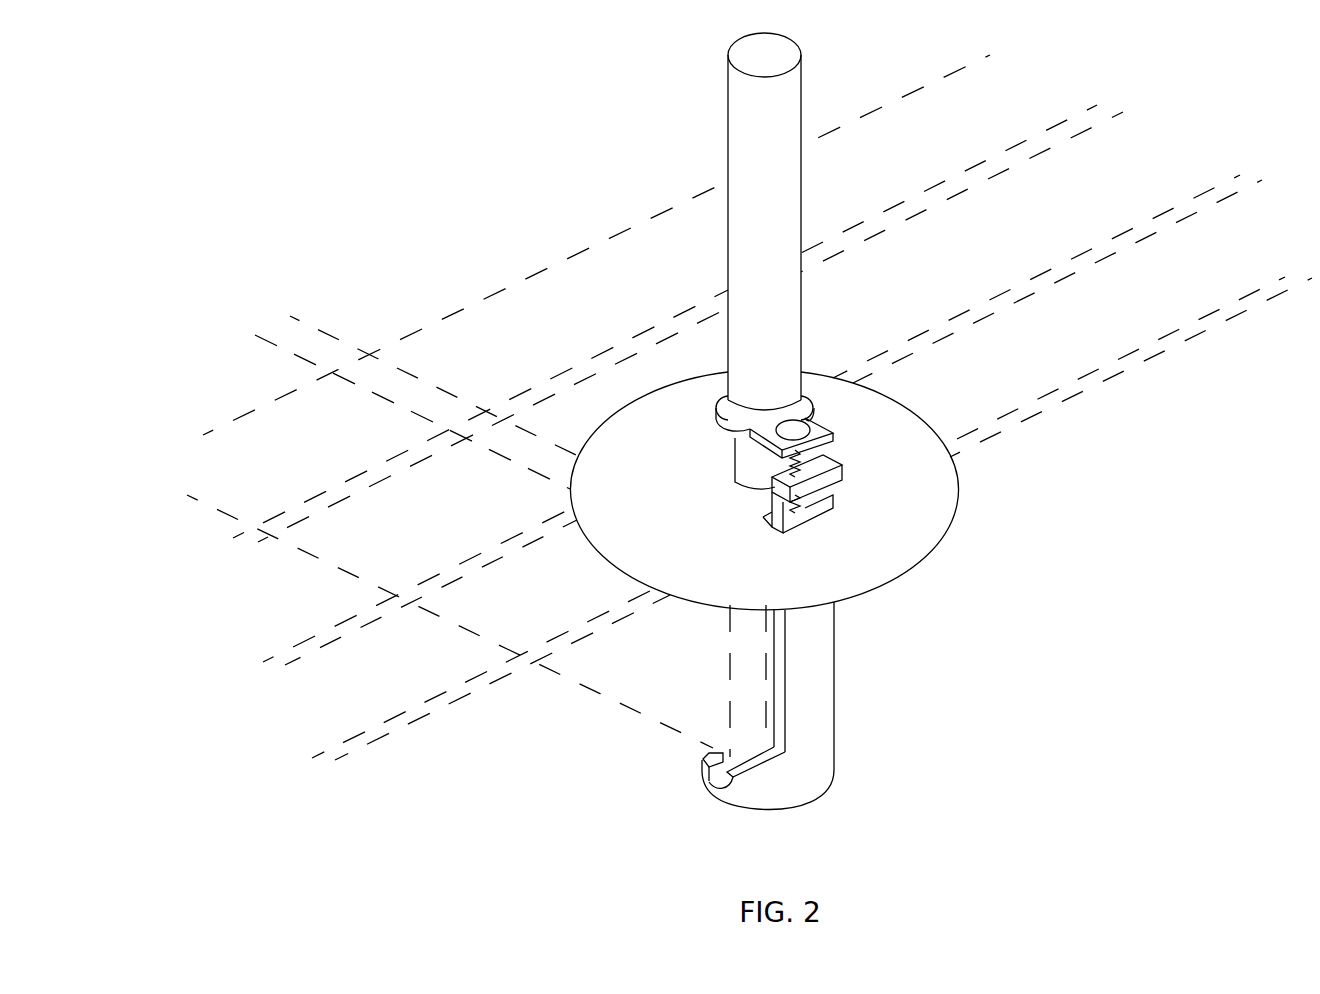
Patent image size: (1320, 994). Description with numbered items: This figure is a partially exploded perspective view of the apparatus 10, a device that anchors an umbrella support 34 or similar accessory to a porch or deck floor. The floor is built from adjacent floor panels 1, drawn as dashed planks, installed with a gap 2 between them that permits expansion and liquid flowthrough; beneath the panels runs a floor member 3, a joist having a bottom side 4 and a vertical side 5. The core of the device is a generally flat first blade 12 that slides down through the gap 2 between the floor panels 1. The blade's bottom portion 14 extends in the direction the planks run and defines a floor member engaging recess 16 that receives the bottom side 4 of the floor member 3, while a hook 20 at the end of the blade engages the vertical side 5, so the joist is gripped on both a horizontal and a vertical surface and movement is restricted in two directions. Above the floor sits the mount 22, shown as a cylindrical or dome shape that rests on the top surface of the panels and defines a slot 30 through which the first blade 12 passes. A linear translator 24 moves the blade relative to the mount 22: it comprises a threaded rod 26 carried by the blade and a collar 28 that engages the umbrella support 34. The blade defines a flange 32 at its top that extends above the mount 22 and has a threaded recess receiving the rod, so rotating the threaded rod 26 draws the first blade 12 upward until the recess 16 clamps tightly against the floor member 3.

The adjacent floor panels 1 is at (252, 644).
The gap 2 is at (488, 719).
The floor member 3 is at (748, 641).
The bottom side of floor member 4 is at (751, 752).
The vertical side of floor member 5 is at (725, 711).
The apparatus 10 is at (446, 74).
The first blade 12 is at (852, 725).
The bottom portion 14 is at (761, 830).
The floor member engaging recess 16 is at (766, 768).
The hook 20 is at (695, 768).
The mount 22 is at (882, 588).
The linear translator 24 is at (815, 428).
The threaded rod 26 is at (776, 466).
The collar 28 is at (808, 392).
The slot 30 is at (850, 502).
The flange 32 is at (840, 462).
The umbrella support 34 is at (728, 172).